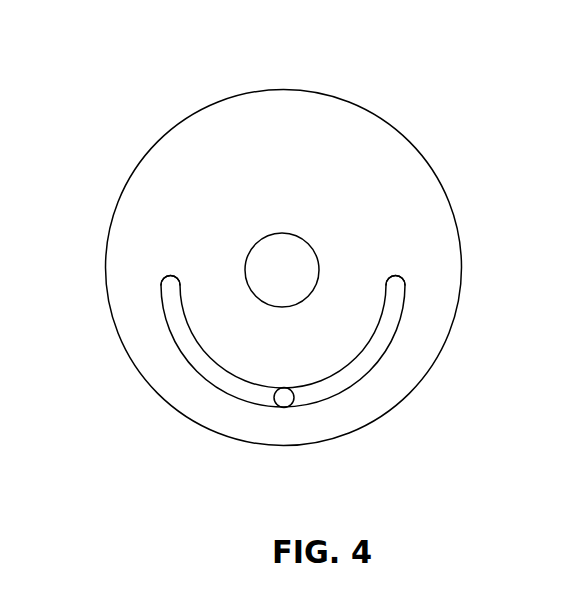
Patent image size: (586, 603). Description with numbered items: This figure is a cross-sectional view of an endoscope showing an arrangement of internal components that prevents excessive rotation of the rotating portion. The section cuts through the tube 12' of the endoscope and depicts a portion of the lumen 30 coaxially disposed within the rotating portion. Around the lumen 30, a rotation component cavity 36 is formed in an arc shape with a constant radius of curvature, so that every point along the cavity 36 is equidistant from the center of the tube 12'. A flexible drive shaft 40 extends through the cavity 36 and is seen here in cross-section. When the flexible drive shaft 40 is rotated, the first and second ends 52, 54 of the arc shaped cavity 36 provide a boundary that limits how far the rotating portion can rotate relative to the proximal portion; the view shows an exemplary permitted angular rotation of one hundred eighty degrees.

The tube 12' is at (284, 223).
The lumen 30 is at (318, 273).
The rotation component cavity 36 is at (395, 338).
The flexible drive shaft 40 is at (287, 408).
The first end 52 is at (170, 285).
The second end 54 is at (398, 290).